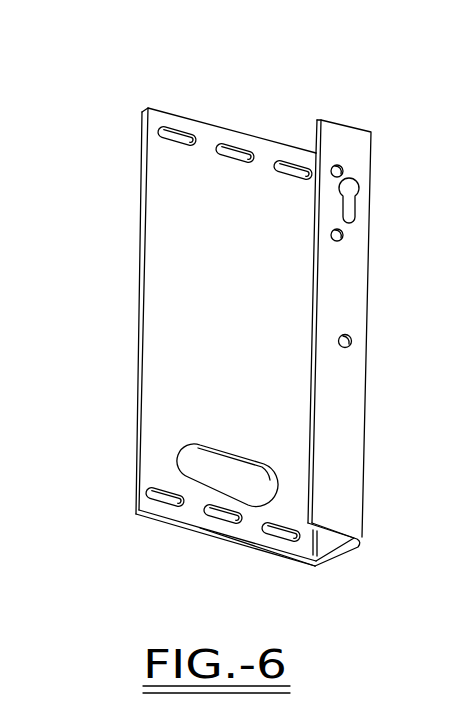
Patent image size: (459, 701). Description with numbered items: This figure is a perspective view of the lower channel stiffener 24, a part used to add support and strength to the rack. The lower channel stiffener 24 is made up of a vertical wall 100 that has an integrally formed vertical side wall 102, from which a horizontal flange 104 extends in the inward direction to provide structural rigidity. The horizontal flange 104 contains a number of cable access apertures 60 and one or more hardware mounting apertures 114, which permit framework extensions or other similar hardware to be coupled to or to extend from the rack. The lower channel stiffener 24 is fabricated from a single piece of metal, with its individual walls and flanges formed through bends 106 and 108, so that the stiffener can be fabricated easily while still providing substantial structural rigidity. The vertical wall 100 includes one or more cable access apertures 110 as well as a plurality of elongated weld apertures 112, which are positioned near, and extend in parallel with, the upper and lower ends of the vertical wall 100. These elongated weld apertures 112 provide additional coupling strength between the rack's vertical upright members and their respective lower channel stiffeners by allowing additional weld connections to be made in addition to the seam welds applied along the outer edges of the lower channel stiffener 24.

The lower channel stiffener 24 is at (243, 104).
The vertical wall 100 is at (212, 267).
The horizontal flange 104 is at (344, 400).
The bend 106 is at (317, 566).
The vertical side wall 102 is at (325, 543).
The bend 108 is at (362, 540).
The cable access aperture 110 is at (212, 458).
The elongated weld apertures 112 is at (241, 150).
The cable access aperture 60 is at (340, 169).
The hardware mounting apertures 114 is at (349, 191).